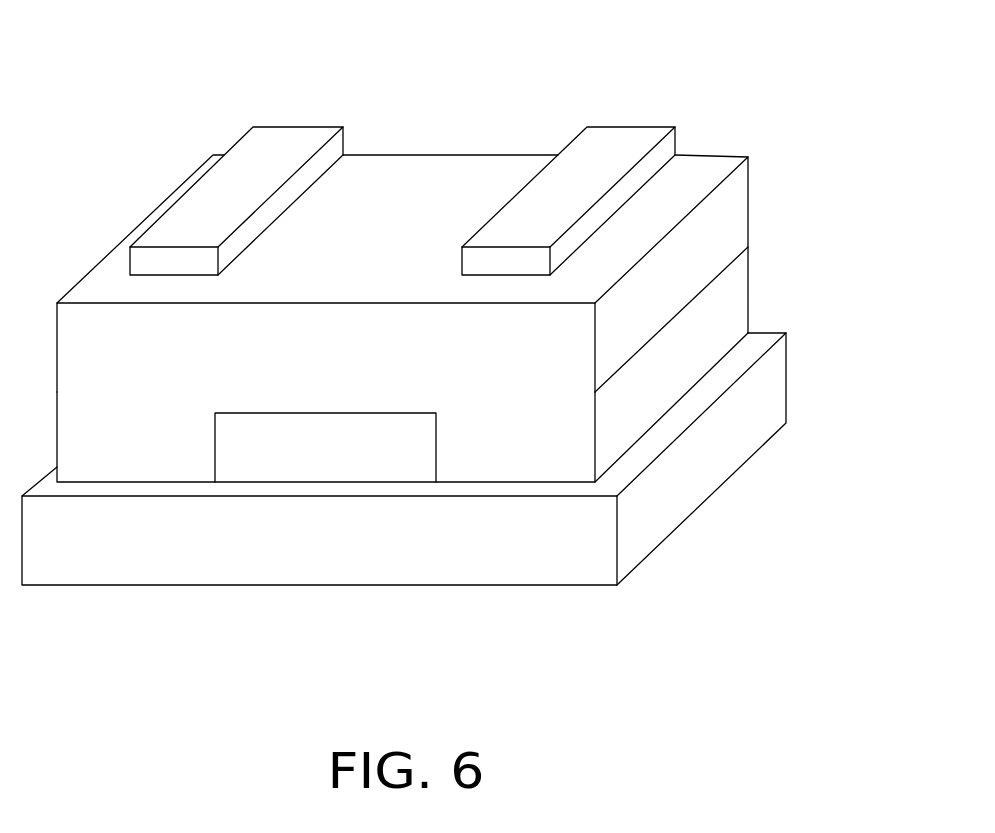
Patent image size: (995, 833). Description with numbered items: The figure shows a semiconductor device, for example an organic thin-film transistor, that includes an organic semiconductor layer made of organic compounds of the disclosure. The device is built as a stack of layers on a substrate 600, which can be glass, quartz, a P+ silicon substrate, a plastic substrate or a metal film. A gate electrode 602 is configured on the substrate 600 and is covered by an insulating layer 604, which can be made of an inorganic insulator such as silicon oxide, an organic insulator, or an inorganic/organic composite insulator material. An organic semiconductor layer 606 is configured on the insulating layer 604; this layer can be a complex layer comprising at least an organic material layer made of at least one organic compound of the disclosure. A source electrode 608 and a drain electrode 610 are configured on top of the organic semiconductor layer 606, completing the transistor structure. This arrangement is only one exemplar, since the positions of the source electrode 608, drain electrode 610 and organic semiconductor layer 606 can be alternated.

The substrate 600 is at (727, 433).
The gate electrode 602 is at (338, 460).
The insulating layer 604 is at (722, 325).
The organic semiconductor layer 606 is at (723, 230).
The source electrode 608 is at (286, 146).
The drain electrode 610 is at (612, 146).